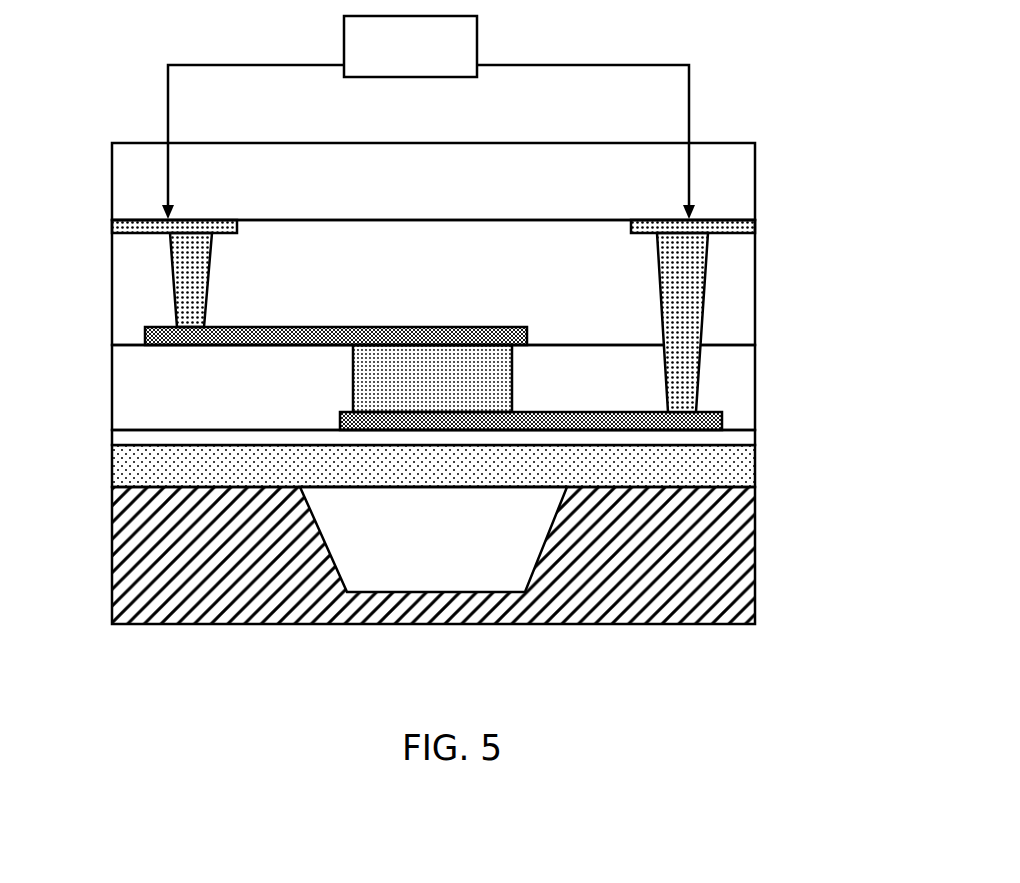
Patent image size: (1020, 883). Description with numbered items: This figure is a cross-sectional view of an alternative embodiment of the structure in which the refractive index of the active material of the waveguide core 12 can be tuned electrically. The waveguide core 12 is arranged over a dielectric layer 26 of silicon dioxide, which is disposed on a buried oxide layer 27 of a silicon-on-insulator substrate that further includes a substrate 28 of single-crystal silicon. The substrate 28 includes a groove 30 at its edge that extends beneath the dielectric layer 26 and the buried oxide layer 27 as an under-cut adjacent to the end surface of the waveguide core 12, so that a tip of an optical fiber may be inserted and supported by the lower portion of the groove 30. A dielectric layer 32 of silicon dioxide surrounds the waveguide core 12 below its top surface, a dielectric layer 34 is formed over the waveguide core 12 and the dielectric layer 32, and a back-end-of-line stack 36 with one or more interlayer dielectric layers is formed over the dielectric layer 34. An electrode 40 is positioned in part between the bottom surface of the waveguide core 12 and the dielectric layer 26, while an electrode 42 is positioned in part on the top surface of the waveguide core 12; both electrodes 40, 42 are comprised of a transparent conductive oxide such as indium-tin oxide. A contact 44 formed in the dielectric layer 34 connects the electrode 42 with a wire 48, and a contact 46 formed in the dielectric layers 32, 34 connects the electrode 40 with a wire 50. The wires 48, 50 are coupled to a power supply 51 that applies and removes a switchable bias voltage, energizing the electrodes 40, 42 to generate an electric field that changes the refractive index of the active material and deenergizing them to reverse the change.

The waveguide core 12 is at (460, 387).
The dielectric layer 26 is at (710, 441).
The buried oxide layer 27 is at (142, 466).
The substrate 28 is at (142, 560).
The groove 30 is at (433, 539).
The dielectric layer 32 is at (150, 390).
The dielectric layer 34 is at (723, 290).
The back-end-of-line stack 36 is at (722, 185).
The electrode 40 is at (358, 421).
The electrode 42 is at (472, 338).
The contact 44 is at (185, 281).
The contact 46 is at (680, 333).
The wire 48 is at (153, 229).
The wire 50 is at (710, 230).
The power supply 51 is at (435, 41).